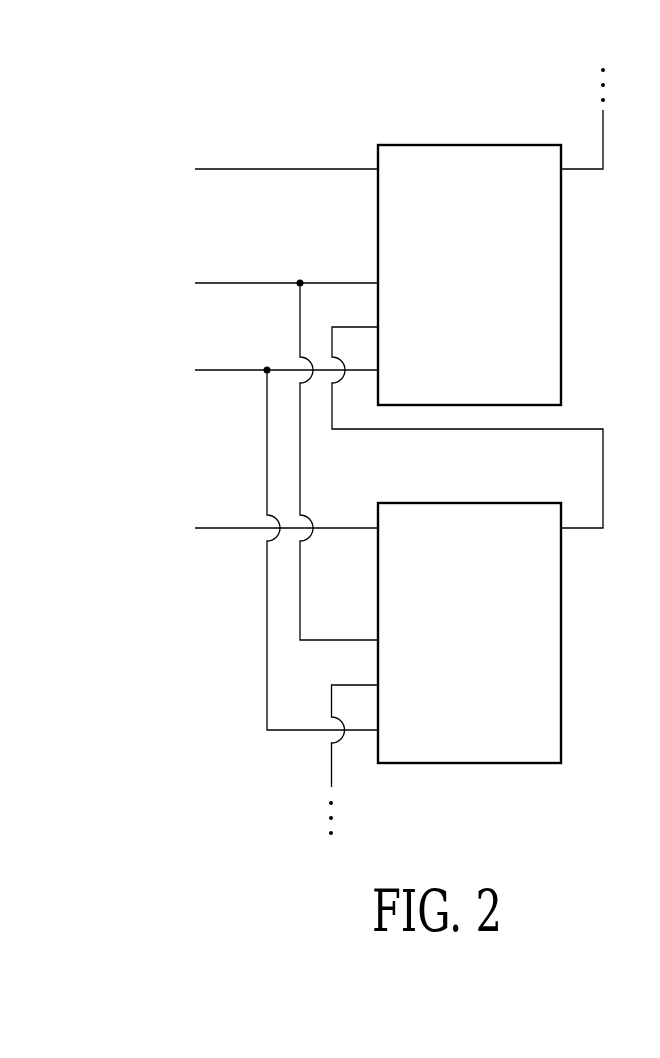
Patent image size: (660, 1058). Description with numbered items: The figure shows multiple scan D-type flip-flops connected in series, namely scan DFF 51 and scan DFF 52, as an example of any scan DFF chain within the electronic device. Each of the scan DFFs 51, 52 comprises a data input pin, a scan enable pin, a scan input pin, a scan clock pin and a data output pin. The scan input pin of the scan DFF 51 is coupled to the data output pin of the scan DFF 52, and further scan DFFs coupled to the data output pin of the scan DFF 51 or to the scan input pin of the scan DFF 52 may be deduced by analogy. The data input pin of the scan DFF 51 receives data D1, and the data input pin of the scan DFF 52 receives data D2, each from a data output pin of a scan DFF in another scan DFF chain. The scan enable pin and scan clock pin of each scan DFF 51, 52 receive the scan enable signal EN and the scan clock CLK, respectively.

The scan DFF 51 is at (467, 144).
The scan DFF 52 is at (465, 503).
The data D1 is at (265, 168).
The data D2 is at (265, 528).
The scan enable signal EN is at (235, 447).
The scan clock CLK is at (225, 537).